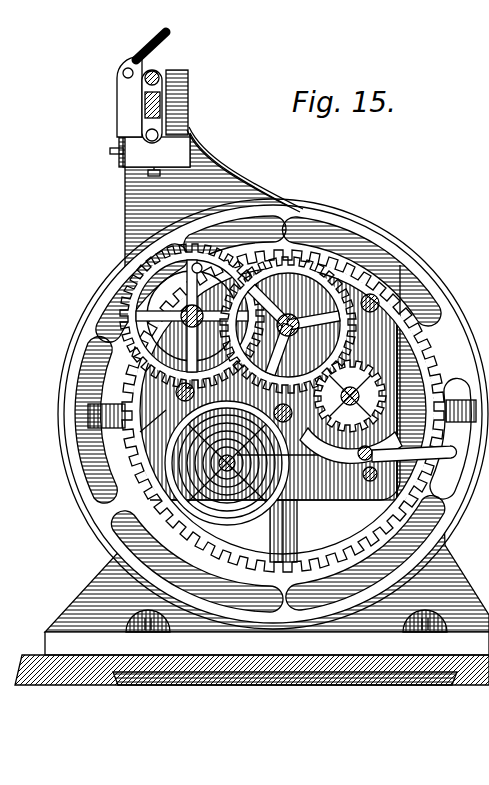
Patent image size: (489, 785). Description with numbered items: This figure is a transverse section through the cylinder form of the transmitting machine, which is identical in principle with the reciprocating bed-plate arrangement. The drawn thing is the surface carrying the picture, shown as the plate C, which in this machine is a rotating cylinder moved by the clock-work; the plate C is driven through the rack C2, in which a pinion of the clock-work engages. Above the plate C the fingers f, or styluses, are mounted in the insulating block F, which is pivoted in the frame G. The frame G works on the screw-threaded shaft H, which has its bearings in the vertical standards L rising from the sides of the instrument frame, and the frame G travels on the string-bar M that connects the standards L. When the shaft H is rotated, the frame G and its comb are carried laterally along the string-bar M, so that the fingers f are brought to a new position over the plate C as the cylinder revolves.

The frame G is at (117, 80).
The screw-threaded shaft H is at (181, 78).
The string-bar M is at (142, 108).
The block F is at (122, 160).
The vertical standards L is at (267, 382).
The fingers f is at (257, 183).
The plate C is at (92, 310).
The rack C2 is at (283, 411).